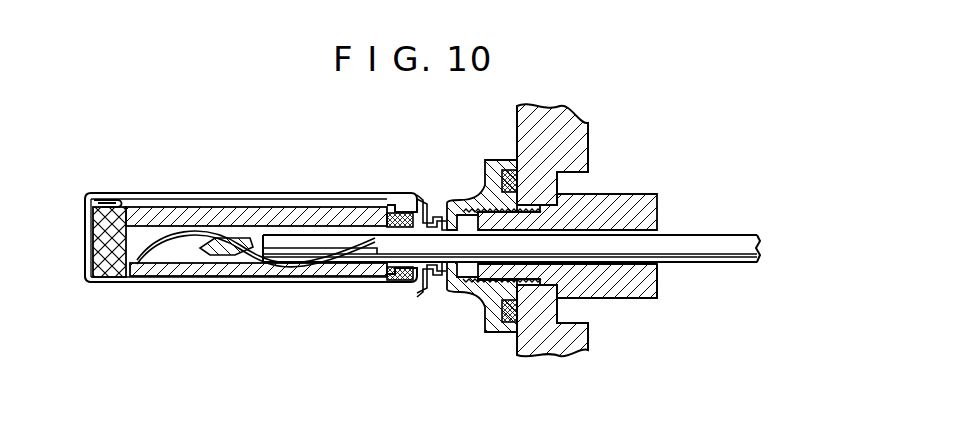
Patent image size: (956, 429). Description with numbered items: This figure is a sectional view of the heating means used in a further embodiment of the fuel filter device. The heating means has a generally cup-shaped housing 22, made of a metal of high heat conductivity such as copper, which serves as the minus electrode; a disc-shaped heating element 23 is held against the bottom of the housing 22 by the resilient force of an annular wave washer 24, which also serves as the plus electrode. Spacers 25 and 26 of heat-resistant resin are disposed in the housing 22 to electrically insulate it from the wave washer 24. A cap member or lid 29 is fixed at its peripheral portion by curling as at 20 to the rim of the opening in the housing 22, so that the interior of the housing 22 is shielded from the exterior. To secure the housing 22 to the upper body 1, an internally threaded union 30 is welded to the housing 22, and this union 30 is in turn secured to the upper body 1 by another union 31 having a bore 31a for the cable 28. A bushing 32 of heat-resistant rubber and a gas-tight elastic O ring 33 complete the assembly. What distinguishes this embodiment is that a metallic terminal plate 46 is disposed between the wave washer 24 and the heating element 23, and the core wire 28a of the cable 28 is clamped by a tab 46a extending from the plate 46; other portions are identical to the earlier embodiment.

The upper body 1 is at (517, 132).
The curling 20 is at (113, 197).
The housing 22 is at (91, 283).
The heating element 23 is at (234, 272).
The wave washer 24 is at (128, 247).
The spacer 25 is at (88, 208).
The spacer 26 is at (171, 217).
The cable 28 is at (712, 259).
The core wire 28a is at (262, 248).
The lid 29 is at (255, 236).
The internally threaded union 30 is at (455, 203).
The union 31 is at (637, 200).
The bore 31a is at (658, 274).
The bushing 32 is at (401, 281).
The O ring 33 is at (503, 310).
The terminal plate 46 is at (162, 266).
The tab 46a is at (238, 232).